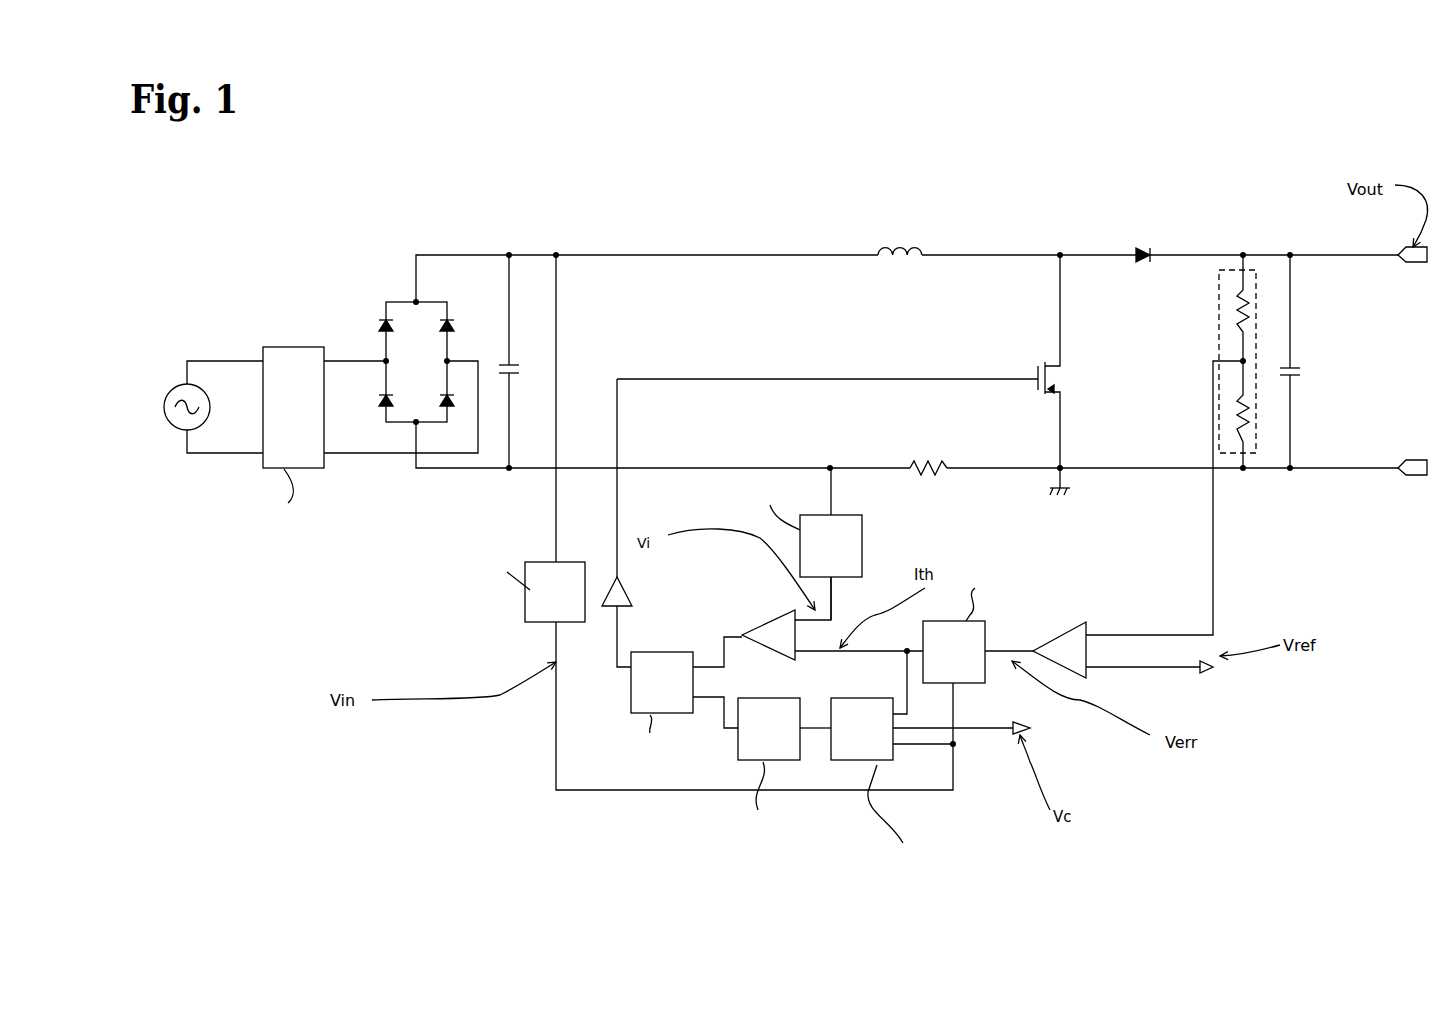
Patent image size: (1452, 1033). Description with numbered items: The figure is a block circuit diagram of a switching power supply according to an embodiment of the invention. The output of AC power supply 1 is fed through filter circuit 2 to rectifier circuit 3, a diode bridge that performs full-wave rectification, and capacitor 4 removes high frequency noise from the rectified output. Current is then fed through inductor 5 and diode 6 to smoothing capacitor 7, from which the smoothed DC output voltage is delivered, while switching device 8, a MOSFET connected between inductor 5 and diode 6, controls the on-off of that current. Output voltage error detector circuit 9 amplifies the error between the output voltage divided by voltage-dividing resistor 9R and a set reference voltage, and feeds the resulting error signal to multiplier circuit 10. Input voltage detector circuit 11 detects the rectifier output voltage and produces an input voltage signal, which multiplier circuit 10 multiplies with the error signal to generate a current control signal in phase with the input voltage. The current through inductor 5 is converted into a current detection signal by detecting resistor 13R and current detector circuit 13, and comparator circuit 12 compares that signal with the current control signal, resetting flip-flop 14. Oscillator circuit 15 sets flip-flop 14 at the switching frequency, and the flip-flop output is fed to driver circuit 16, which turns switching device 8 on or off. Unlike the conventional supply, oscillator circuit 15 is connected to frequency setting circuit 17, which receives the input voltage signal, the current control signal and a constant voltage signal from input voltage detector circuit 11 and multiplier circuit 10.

The AC power supply 1 is at (172, 390).
The filter circuit 2 is at (287, 340).
The rectifier circuit 3 is at (383, 293).
The capacitor 4 is at (511, 364).
The inductor 5 is at (876, 252).
The diode 6 is at (1134, 249).
The smoothing capacitor 7 is at (1290, 360).
The switching device 8 is at (1023, 368).
The output voltage error detector circuit 9 is at (1088, 625).
The voltage-dividing resistor 9R is at (1243, 454).
The multiplier circuit 10 is at (977, 677).
The input voltage detector circuit 11 is at (532, 598).
The comparator circuit 12 is at (752, 625).
The current detector circuit 13 is at (852, 540).
The detecting resistor 13R is at (910, 455).
The flip-flop 14 is at (624, 700).
The oscillator circuit 15 is at (738, 765).
The driver circuit 16 is at (605, 576).
The frequency setting circuit 17 is at (882, 763).